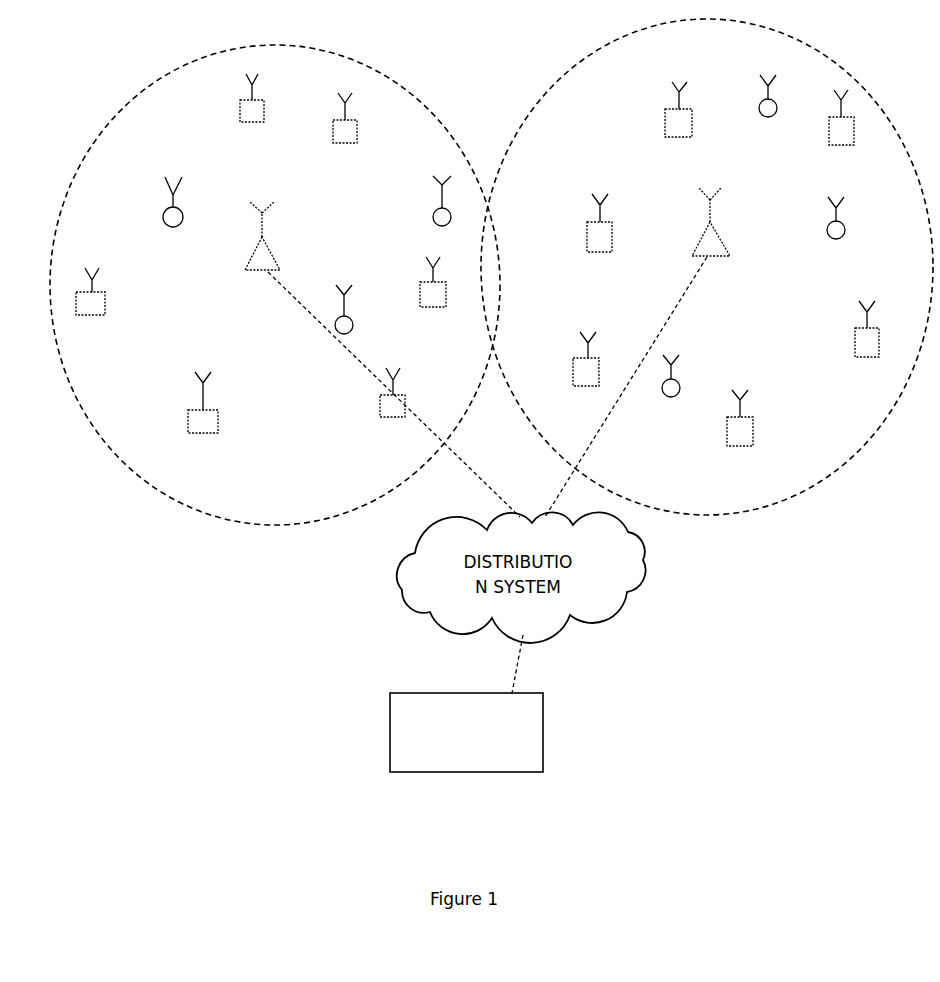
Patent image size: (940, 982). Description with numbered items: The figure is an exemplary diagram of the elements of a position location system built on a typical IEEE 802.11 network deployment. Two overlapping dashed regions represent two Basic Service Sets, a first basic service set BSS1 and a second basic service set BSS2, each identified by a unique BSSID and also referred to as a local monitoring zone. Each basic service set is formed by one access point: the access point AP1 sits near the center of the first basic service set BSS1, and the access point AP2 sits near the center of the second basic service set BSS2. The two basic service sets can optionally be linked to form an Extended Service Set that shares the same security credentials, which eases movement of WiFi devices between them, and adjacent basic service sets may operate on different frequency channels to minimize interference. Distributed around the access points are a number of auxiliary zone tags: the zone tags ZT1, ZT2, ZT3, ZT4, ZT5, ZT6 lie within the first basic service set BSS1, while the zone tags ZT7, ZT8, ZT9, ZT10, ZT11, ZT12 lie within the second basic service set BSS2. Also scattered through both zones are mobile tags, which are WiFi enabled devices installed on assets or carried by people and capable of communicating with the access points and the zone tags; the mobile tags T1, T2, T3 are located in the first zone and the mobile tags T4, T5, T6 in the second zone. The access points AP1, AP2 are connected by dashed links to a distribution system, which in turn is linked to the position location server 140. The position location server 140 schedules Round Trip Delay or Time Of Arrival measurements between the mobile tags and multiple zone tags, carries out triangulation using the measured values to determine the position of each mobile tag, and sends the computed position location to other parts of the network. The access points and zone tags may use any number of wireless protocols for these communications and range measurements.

The basic service set BSS1 is at (148, 83).
The basic service set BSS2 is at (838, 63).
The access point AP1 is at (248, 232).
The access point AP2 is at (688, 257).
The zone tag ZT1 is at (240, 117).
The zone tag ZT2 is at (105, 313).
The zone tag ZT3 is at (218, 430).
The zone tag ZT4 is at (333, 128).
The zone tag ZT5 is at (420, 294).
The zone tag ZT6 is at (380, 405).
The zone tag ZT7 is at (665, 130).
The zone tag ZT8 is at (587, 247).
The zone tag ZT9 is at (573, 380).
The zone tag ZT10 is at (727, 440).
The zone tag ZT11 is at (855, 352).
The zone tag ZT12 is at (829, 140).
The mobile tag T1 is at (433, 211).
The mobile tag T2 is at (336, 321).
The mobile tag T3 is at (164, 212).
The mobile tag T4 is at (760, 102).
The mobile tag T5 is at (827, 225).
The mobile tag T6 is at (662, 382).
The position location server 140 is at (457, 775).